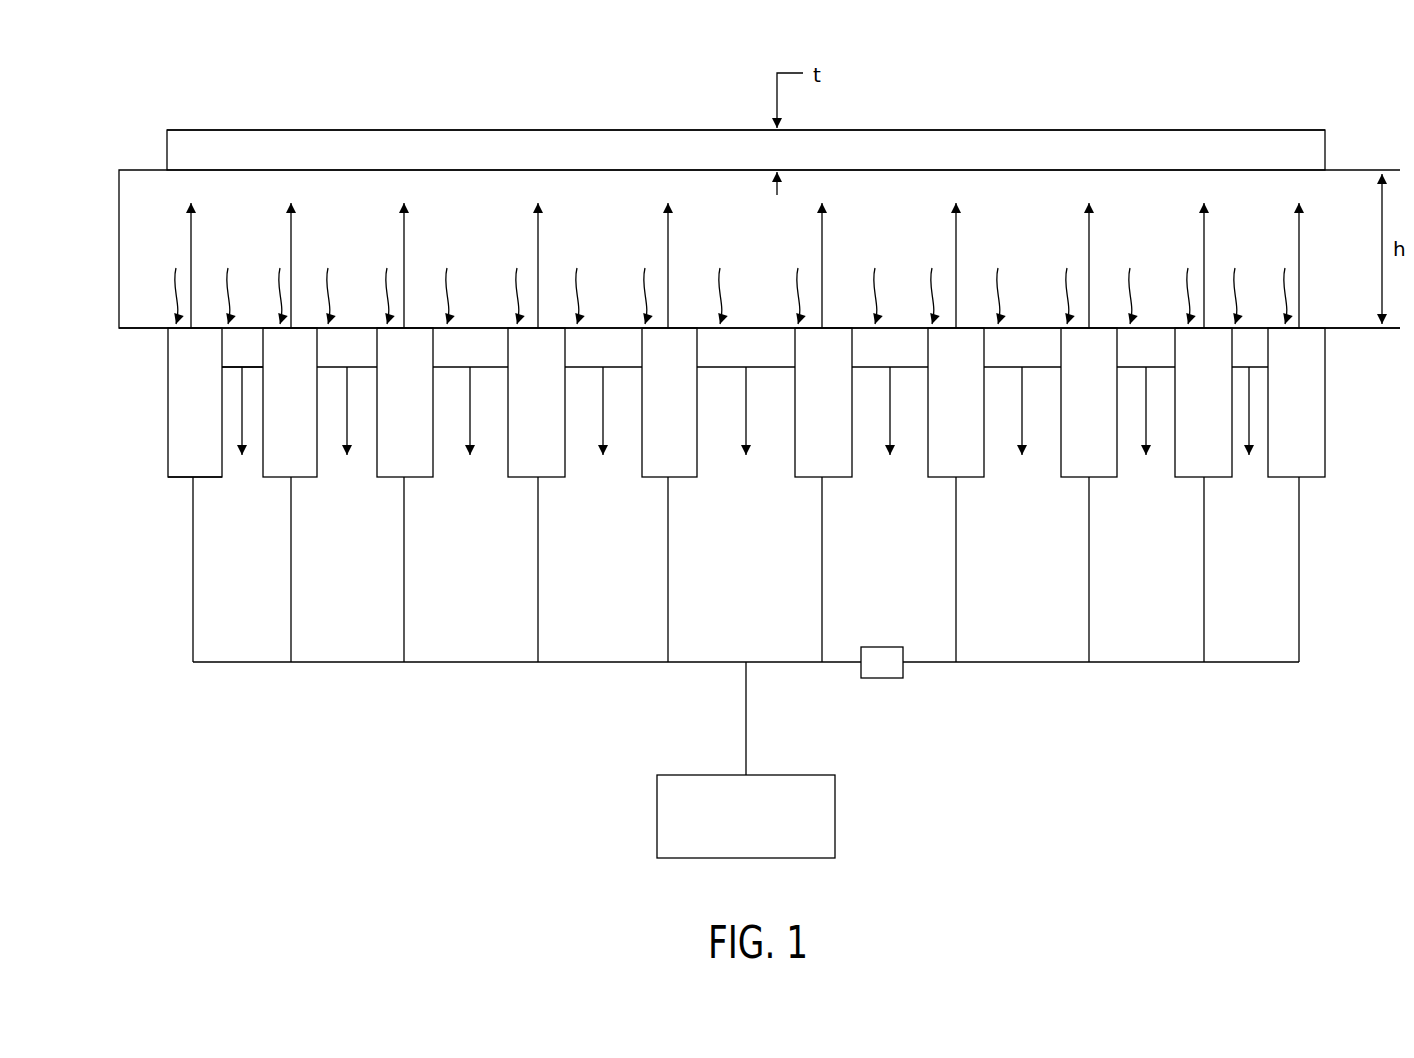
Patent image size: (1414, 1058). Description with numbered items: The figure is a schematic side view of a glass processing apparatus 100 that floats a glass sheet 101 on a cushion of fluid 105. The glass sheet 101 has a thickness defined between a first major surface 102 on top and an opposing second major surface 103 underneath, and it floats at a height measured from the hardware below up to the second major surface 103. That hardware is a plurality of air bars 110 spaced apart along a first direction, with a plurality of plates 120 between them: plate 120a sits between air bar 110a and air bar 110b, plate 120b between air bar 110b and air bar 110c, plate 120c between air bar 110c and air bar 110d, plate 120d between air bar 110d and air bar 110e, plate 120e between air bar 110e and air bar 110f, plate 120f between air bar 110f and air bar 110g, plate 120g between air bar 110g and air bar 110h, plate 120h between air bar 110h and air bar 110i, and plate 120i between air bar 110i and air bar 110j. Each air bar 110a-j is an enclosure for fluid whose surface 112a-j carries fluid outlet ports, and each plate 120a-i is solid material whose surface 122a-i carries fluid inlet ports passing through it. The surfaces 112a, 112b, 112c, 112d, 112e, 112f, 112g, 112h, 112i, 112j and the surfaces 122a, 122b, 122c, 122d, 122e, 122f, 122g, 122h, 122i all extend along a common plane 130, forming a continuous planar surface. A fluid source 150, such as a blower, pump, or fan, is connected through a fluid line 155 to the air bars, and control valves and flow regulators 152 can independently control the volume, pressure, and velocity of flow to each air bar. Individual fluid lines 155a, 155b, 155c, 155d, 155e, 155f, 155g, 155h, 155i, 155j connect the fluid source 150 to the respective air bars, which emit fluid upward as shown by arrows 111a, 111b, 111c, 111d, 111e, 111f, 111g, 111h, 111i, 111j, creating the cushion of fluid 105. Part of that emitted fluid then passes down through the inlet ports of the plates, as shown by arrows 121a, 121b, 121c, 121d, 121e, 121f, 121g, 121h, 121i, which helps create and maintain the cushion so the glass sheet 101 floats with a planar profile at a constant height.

The glass processing apparatus 100 is at (510, 722).
The glass sheet 101 is at (424, 142).
The first major surface 102 is at (534, 128).
The second major surface 103 is at (681, 176).
The cushion of fluid 105 is at (117, 244).
The common plane 130 is at (155, 331).
The plurality of air bars 110 is at (148, 468).
The plurality of plates 120 is at (148, 405).
The air bar 110a is at (174, 478).
The air bar 110b is at (269, 478).
The air bar 110c is at (383, 478).
The air bar 110d is at (514, 478).
The air bar 110e is at (648, 478).
The air bar 110f is at (801, 478).
The air bar 110g is at (934, 478).
The air bar 110h is at (1067, 478).
The air bar 110i is at (1181, 478).
The air bar 110j is at (1274, 478).
The arrow 111a is at (190, 234).
The arrow 111b is at (290, 234).
The arrow 111c is at (403, 234).
The arrow 111d is at (537, 234).
The arrow 111e is at (667, 234).
The arrow 111f is at (821, 234).
The arrow 111g is at (955, 234).
The arrow 111h is at (1088, 234).
The arrow 111i is at (1203, 234).
The arrow 111j is at (1298, 234).
The surface 112a is at (160, 281).
The surface 112b is at (264, 281).
The surface 112c is at (371, 281).
The surface 112d is at (501, 281).
The surface 112e is at (629, 281).
The surface 112f is at (782, 281).
The surface 112g is at (916, 281).
The surface 112h is at (1051, 281).
The surface 112i is at (1172, 281).
The surface 112j is at (1269, 281).
The plate 120a is at (250, 345).
The plate 120b is at (355, 345).
The plate 120c is at (478, 345).
The plate 120d is at (611, 345).
The plate 120e is at (754, 345).
The plate 120f is at (898, 345).
The plate 120g is at (1030, 345).
The plate 120h is at (1154, 345).
The plate 120i is at (1257, 345).
The arrow 121a is at (240, 418).
The arrow 121b is at (345, 418).
The arrow 121c is at (468, 418).
The arrow 121d is at (601, 418).
The arrow 121e is at (744, 418).
The arrow 121f is at (888, 418).
The arrow 121g is at (1020, 418).
The arrow 121h is at (1144, 418).
The arrow 121i is at (1247, 418).
The surface 122a is at (212, 281).
The surface 122b is at (312, 281).
The surface 122c is at (431, 281).
The surface 122d is at (561, 281).
The surface 122e is at (704, 281).
The surface 122f is at (859, 281).
The surface 122g is at (982, 281).
The surface 122h is at (1114, 281).
The surface 122i is at (1219, 281).
The fluid source 150 is at (828, 813).
The control valves and flow regulators 152 is at (903, 670).
The fluid line 155 is at (748, 738).
The fluid line 155a is at (193, 633).
The fluid line 155b is at (291, 633).
The fluid line 155c is at (404, 633).
The fluid line 155d is at (538, 633).
The fluid line 155e is at (668, 633).
The fluid line 155f is at (822, 633).
The fluid line 155g is at (956, 633).
The fluid line 155h is at (1089, 633).
The fluid line 155i is at (1204, 633).
The fluid line 155j is at (1299, 633).